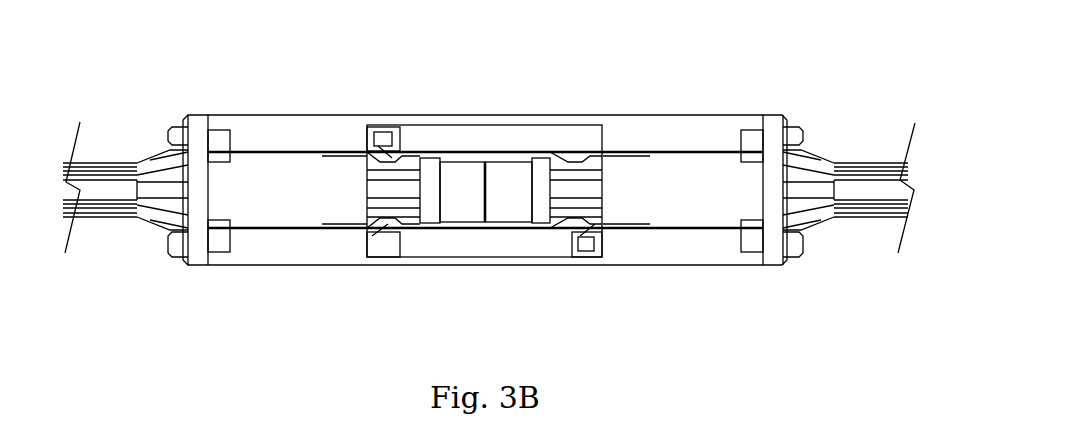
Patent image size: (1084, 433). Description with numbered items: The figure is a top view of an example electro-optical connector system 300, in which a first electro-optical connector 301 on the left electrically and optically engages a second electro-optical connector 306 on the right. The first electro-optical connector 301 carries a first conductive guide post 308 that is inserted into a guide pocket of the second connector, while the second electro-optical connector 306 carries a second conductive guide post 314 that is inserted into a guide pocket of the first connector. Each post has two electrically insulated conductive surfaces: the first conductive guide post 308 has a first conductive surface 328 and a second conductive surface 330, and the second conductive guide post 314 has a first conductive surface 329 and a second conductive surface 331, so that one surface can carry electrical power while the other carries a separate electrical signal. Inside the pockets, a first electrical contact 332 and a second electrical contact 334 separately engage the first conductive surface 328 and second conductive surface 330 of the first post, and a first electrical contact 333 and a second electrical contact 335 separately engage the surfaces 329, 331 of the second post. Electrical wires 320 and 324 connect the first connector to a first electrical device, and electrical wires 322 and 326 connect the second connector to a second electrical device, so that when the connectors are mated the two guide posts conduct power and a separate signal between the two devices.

The electro-optical connector system 300 is at (260, 60).
The first electro-optical connector 301 is at (269, 276).
The second electro-optical connector 306 is at (699, 98).
The first conductive guide post 308 is at (395, 268).
The second conductive guide post 314 is at (559, 112).
The electrical wires 320 is at (143, 231).
The electrical wires 322 is at (855, 232).
The electrical wires 324 is at (106, 152).
The electrical wires 326 is at (828, 142).
The first conductive surface 328 is at (482, 233).
The first conductive surface 329 is at (463, 140).
The second conductive surface 330 is at (577, 232).
The second conductive surface 331 is at (390, 150).
The first electrical contact 332 is at (565, 222).
The first electrical contact 333 is at (412, 155).
The second electrical contact 334 is at (601, 233).
The second electrical contact 335 is at (366, 138).